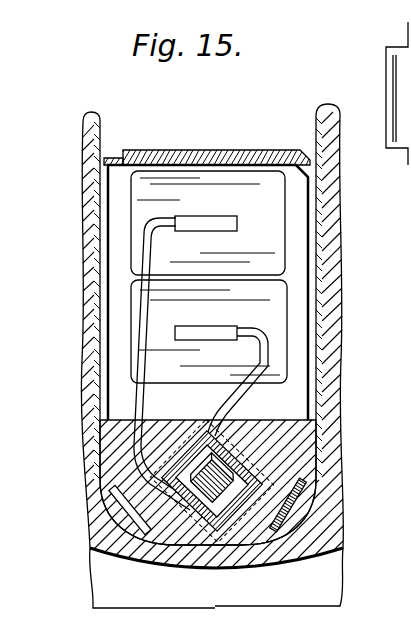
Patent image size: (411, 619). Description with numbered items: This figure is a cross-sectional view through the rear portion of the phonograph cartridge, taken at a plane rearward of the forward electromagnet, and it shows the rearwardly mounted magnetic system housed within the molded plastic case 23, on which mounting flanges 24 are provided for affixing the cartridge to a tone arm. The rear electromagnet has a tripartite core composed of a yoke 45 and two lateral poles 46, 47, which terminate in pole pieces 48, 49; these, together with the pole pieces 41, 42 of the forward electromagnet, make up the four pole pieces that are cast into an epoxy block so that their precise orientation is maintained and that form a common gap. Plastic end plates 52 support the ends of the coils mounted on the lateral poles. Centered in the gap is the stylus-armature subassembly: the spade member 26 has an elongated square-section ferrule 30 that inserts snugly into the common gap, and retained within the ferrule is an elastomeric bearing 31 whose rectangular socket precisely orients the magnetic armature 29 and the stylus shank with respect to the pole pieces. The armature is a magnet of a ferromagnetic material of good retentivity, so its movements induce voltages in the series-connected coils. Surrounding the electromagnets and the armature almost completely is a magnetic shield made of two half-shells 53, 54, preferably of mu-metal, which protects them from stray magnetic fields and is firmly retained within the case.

The molded plastic case 23 is at (338, 340).
The mounting flanges 24 is at (192, 535).
The spade member 26 is at (279, 577).
The magnetic armature 29 is at (215, 442).
The ferrule 30 is at (265, 466).
The elastomeric bearing 31 is at (233, 442).
The pole piece 41 is at (285, 520).
The pole piece 42 is at (187, 460).
The yoke 45 is at (219, 236).
The lateral pole 46 is at (156, 297).
The lateral pole 47 is at (264, 374).
The pole piece 48 is at (138, 510).
The pole piece 49 is at (268, 432).
The plastic end plates 52 is at (252, 185).
The magnetic shield half-shell 53 is at (207, 150).
The magnetic shield half-shell 54 is at (147, 150).